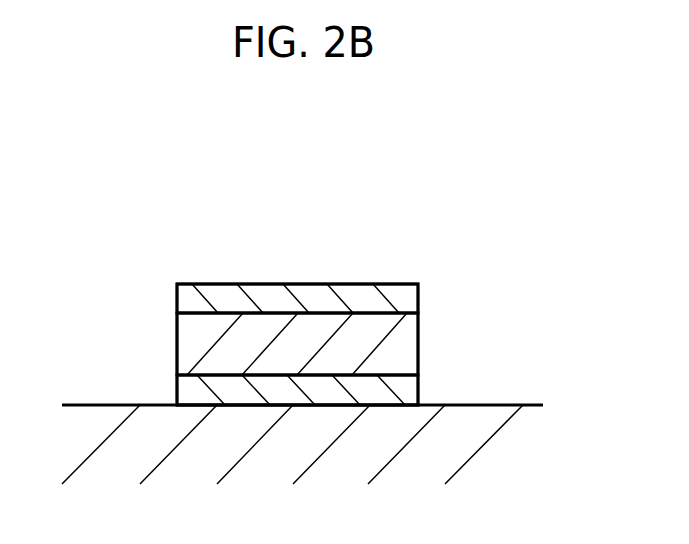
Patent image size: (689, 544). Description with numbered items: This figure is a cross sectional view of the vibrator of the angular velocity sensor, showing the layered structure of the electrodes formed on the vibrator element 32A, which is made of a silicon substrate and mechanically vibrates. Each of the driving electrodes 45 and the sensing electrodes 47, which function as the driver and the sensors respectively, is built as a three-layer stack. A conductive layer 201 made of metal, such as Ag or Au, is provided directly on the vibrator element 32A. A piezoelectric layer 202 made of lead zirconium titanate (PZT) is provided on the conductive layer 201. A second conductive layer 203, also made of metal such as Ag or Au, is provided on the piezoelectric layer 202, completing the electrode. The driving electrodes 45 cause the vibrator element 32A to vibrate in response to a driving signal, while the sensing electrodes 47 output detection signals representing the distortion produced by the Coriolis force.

The conductive layer 201 is at (403, 387).
The piezoelectric layer 202 is at (405, 348).
The conductive layer 203 is at (400, 298).
The vibrator element 32A is at (480, 427).
The driving electrodes 45 is at (402, 321).
The sensing electrodes 47 is at (543, 238).